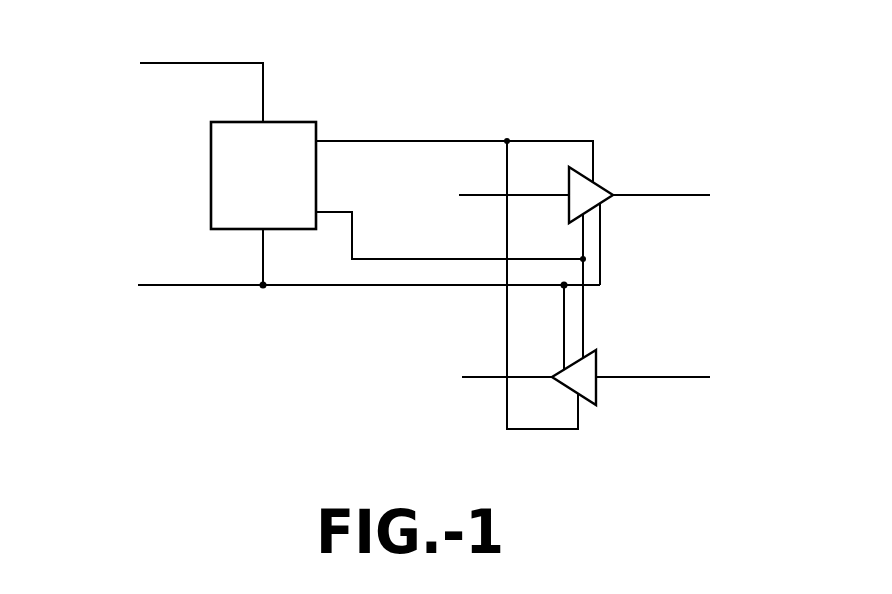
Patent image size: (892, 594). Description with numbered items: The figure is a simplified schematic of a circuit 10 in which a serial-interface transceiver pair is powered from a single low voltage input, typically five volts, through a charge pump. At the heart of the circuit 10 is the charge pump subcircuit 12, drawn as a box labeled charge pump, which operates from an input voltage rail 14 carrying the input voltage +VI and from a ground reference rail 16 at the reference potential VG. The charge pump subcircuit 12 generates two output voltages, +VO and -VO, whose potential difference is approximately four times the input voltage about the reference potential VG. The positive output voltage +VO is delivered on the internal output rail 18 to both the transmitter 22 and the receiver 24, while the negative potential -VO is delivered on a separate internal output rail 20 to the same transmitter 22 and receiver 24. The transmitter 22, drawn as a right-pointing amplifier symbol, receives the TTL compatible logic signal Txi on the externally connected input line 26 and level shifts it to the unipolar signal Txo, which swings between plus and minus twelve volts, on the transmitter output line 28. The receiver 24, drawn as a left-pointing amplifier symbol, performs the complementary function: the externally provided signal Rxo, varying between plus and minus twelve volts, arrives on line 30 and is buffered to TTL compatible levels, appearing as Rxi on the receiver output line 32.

The circuit 10 is at (591, 87).
The charge pump subcircuit 12 is at (211, 177).
The input voltage rail 14 is at (202, 63).
The ground reference rail 16 is at (240, 285).
The internal output rail 18 is at (412, 141).
The internal output rail 20 is at (398, 259).
The transmitter 22 is at (595, 192).
The receiver 24 is at (586, 368).
The input line 26 is at (523, 195).
The transmitter output line 28 is at (635, 195).
The receiver output line RXO 30 is at (625, 377).
The receiver output line 32 is at (528, 377).